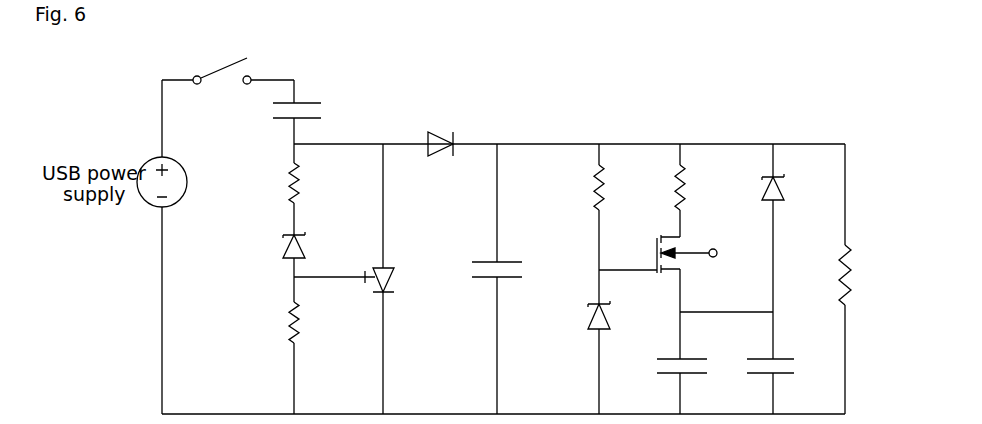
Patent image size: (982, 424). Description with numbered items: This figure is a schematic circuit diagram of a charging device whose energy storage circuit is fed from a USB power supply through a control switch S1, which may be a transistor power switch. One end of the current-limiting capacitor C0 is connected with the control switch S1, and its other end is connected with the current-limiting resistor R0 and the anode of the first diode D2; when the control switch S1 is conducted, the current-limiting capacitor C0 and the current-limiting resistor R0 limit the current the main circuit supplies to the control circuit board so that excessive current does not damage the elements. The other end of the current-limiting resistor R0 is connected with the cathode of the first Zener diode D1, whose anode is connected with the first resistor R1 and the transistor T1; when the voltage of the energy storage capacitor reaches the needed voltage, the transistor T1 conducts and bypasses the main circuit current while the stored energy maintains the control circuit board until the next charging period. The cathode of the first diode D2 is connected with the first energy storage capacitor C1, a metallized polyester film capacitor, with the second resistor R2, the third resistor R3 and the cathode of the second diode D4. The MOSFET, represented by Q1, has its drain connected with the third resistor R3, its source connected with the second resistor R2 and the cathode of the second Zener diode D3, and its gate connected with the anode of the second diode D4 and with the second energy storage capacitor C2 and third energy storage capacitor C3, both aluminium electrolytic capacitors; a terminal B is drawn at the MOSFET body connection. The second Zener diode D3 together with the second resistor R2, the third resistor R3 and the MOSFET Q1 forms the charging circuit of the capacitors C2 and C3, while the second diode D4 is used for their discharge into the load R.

The control switch S1 is at (228, 62).
The current-limiting capacitor C0 is at (287, 110).
The current-limiting resistor R0 is at (280, 183).
The first Zener diode D1 is at (281, 245).
The first resistor R1 is at (280, 322).
The transistor T1 is at (375, 269).
The first energy storage capacitor C1 is at (485, 274).
The first diode D2 is at (429, 137).
The second resistor R2 is at (586, 187).
The third resistor R3 is at (668, 187).
The MOSFET Q1 is at (657, 254).
The terminal B is at (703, 253).
The second Zener diode D3 is at (586, 315).
The second diode D4 is at (762, 187).
The second energy storage capacitor C2 is at (677, 354).
The third energy storage capacitor C3 is at (768, 354).
The load resistor R is at (814, 275).